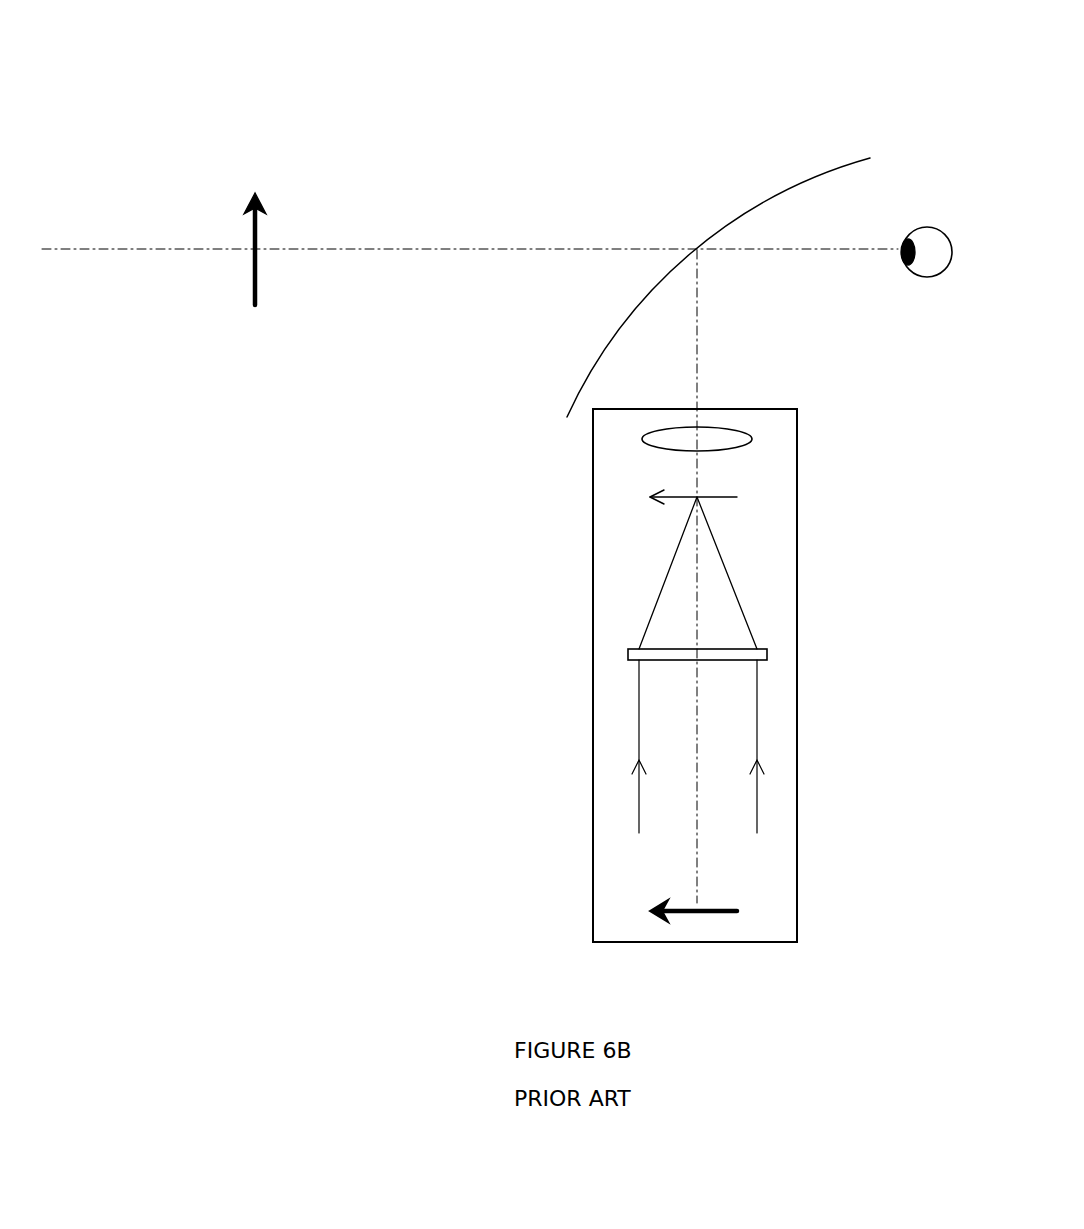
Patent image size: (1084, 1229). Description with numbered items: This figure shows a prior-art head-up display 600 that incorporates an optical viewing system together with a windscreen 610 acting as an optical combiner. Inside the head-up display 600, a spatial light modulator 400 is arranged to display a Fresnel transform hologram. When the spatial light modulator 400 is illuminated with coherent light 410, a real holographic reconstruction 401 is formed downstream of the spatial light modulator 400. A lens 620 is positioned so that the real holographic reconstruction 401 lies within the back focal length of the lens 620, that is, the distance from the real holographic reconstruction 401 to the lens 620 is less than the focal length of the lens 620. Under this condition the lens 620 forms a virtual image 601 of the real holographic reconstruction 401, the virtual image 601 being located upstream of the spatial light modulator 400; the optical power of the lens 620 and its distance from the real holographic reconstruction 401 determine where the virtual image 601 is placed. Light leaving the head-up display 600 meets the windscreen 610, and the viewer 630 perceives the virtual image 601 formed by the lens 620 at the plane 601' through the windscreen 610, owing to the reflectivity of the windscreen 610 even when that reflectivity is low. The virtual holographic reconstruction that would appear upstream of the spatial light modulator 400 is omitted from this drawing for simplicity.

The windscreen 610 is at (813, 176).
The viewer 630 is at (926, 269).
The plane 601' is at (344, 289).
The head-up display 600 is at (593, 668).
The lens 620 is at (643, 440).
The real holographic reconstruction 401 is at (735, 500).
The spatial light modulator 400 is at (768, 652).
The coherent light 410 is at (757, 800).
The virtual image 601 is at (788, 936).